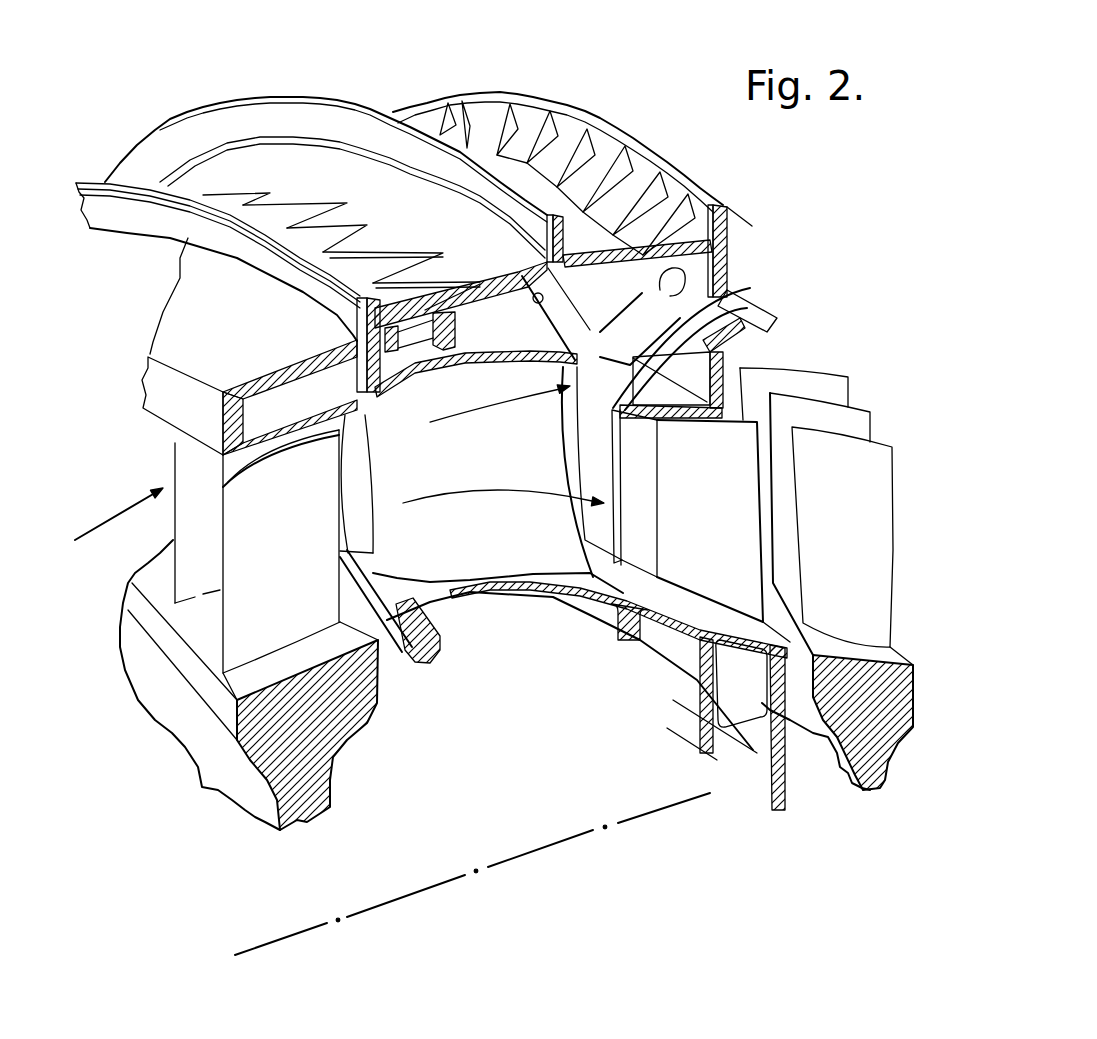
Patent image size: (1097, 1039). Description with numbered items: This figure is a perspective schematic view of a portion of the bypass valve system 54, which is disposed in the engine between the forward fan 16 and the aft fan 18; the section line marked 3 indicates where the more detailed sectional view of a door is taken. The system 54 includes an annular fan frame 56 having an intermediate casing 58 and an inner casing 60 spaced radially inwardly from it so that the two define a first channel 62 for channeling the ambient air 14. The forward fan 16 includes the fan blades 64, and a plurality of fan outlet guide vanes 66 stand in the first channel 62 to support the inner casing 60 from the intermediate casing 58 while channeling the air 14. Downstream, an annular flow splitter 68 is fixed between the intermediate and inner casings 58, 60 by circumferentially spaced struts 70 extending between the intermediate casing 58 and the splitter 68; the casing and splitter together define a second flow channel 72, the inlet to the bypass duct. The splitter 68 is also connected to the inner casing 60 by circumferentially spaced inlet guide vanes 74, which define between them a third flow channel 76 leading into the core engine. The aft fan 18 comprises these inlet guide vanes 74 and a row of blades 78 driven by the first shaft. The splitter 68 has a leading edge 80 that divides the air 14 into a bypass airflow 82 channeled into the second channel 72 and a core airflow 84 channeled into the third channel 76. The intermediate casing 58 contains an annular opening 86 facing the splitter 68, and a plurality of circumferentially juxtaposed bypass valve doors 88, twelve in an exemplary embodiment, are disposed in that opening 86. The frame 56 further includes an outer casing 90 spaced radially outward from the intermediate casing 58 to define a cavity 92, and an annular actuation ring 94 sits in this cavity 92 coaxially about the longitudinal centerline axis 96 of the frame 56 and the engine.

The section line 3- 3 is at (400, 53).
The ambient air 14 is at (102, 518).
The forward fan 16 is at (384, 700).
The aft fan 18 is at (663, 670).
The bypass valve system 54 is at (613, 118).
The annular fan frame 56 is at (513, 155).
The intermediate casing 58 is at (483, 372).
The inner casing 60 is at (500, 590).
The first channel 62 is at (430, 473).
The fan blades 64 is at (238, 635).
The fan outlet guide vanes 66 is at (463, 532).
The annular flow splitter 68 is at (666, 425).
The struts 70 is at (722, 262).
The second flow channel 72 is at (647, 323).
The inlet guide vanes 74 is at (753, 535).
The third flow channel 76 is at (710, 513).
The blades 78 is at (920, 410).
The leading edge 80 is at (595, 392).
The bypass airflow 82 is at (521, 403).
The core airflow 84 is at (508, 492).
The annular opening 86 is at (720, 292).
The bypass valve doors 88 is at (573, 317).
The outer casing 90 is at (493, 280).
The cavity 92 is at (500, 342).
The annular actuation ring 94 is at (415, 337).
The longitudinal centerline axis 96 is at (537, 852).